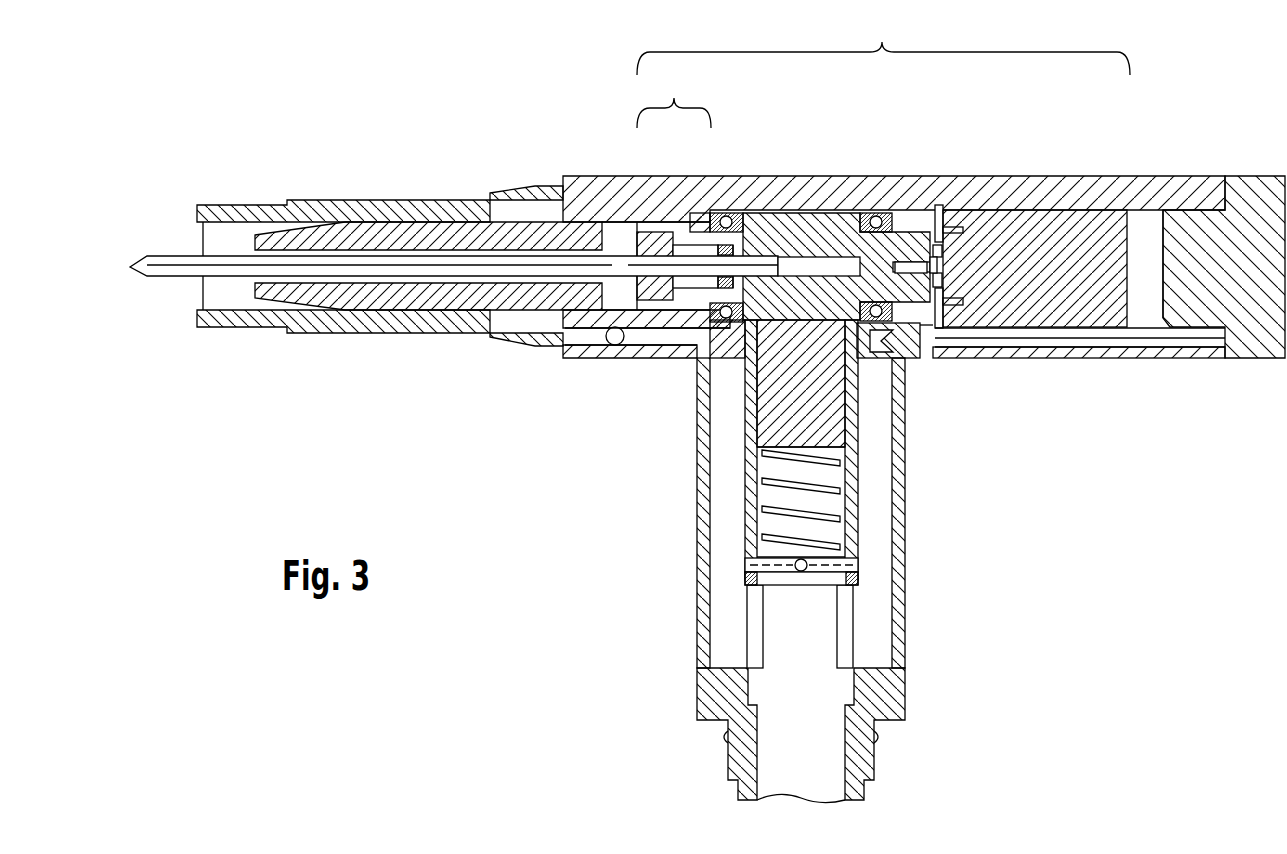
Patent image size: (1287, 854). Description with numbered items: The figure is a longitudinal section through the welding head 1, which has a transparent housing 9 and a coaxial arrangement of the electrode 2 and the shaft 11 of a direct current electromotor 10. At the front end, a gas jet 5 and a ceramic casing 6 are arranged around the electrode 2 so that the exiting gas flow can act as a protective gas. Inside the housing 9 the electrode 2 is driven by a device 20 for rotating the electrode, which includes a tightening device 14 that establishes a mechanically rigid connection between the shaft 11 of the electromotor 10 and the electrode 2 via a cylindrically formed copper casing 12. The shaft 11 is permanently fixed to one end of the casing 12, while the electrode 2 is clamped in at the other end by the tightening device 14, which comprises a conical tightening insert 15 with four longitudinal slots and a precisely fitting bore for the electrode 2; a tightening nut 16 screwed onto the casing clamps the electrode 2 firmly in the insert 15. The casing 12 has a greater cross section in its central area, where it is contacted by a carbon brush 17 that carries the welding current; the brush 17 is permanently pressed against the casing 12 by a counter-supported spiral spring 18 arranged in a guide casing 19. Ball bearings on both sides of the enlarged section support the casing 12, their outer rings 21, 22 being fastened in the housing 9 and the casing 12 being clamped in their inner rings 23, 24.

The welding head 1 is at (1152, 146).
The electrode 2 is at (175, 262).
The gas jet 5 is at (318, 235).
The ceramic casing 6 is at (413, 205).
The transparent housing 9 is at (1085, 358).
The direct current electromotor 10 is at (1030, 240).
The shaft 11 is at (907, 292).
The copper casing 12 is at (760, 367).
The tightening device 14 is at (683, 185).
The tightening insert 15 is at (690, 285).
The tightening nut 16 is at (653, 243).
The carbon brush 17 is at (813, 390).
The spiral spring 18 is at (793, 513).
The guide casing 19 is at (853, 523).
The device for rotating the electrode 20 is at (883, 43).
The outer ring 21 is at (733, 212).
The outer ring 22 is at (870, 212).
The inner ring 23 is at (720, 233).
The inner ring 24 is at (900, 212).